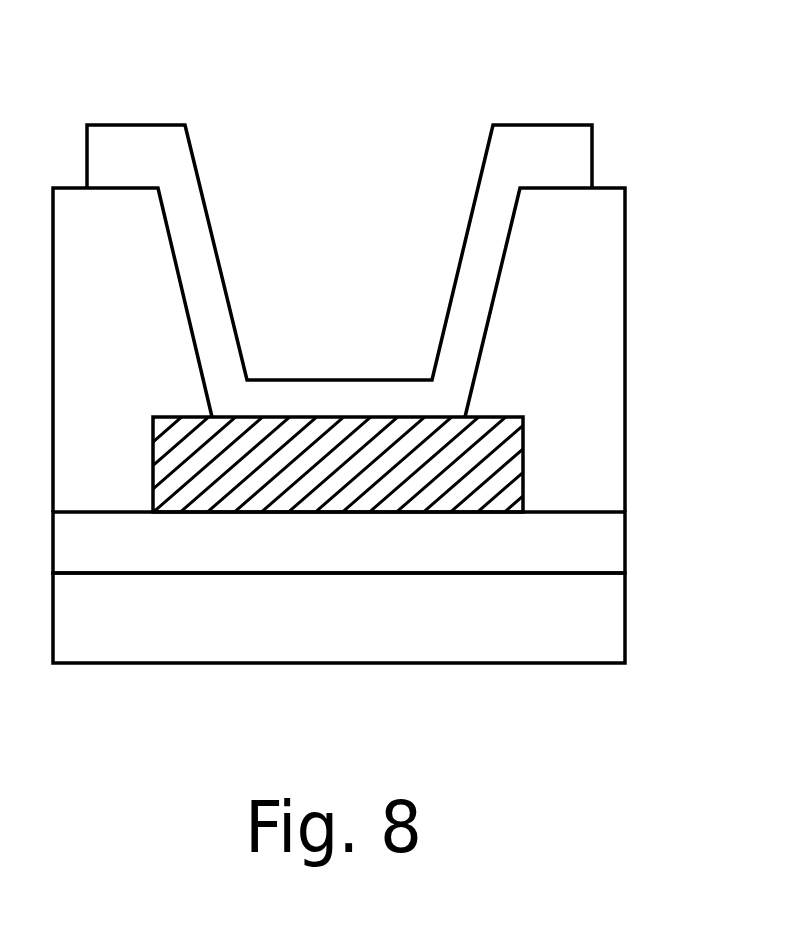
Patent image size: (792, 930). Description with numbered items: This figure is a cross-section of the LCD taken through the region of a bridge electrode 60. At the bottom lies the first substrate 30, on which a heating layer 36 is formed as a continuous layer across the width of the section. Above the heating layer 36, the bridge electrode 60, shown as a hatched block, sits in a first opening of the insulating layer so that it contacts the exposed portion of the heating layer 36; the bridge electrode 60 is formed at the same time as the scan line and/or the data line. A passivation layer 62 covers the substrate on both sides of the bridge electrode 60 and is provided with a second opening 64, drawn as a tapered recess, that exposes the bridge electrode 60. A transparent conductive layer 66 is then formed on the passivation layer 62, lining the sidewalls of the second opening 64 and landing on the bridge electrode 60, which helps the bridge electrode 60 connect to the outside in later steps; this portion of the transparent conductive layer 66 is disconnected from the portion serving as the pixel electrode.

The first substrate 30 is at (358, 637).
The heating layer 36 is at (585, 550).
The bridge electrode 60 is at (342, 435).
The passivation layer 62 is at (577, 287).
The second opening 64 is at (350, 112).
The transparent conductive layer 66 is at (567, 160).